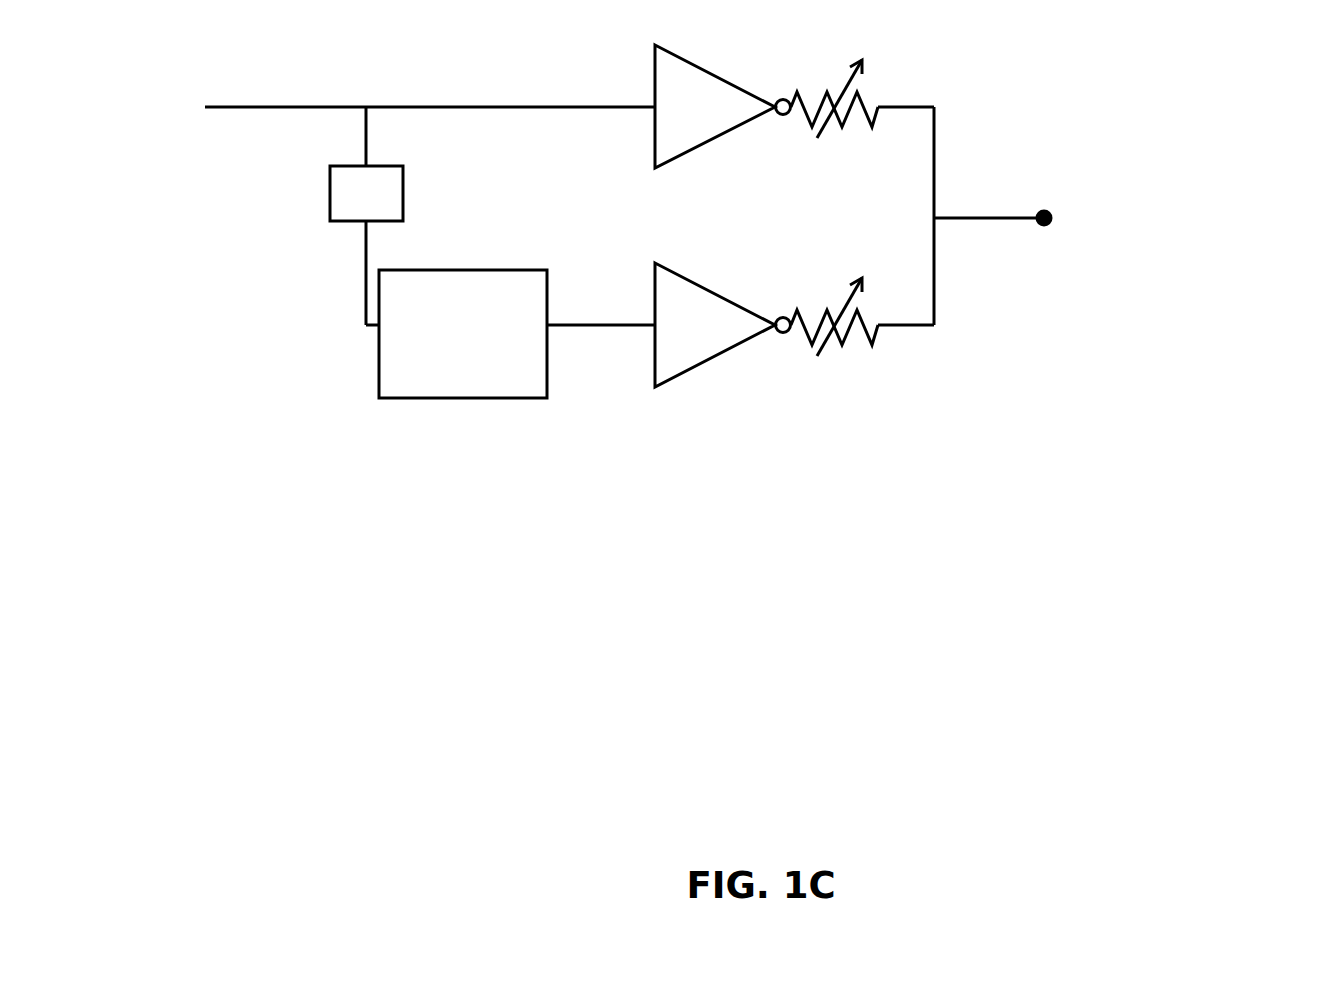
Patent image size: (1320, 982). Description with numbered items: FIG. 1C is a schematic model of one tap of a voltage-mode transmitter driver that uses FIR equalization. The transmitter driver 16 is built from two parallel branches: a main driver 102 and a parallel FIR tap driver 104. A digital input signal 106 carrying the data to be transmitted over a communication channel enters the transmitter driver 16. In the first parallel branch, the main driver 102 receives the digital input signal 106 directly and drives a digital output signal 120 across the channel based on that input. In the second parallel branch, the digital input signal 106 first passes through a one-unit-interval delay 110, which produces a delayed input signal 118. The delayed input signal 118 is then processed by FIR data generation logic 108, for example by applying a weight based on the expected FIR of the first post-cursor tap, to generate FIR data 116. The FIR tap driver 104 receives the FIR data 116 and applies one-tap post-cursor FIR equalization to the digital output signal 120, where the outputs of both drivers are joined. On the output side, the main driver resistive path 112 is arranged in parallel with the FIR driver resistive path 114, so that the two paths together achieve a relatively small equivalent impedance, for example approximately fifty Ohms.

The transmitter driver 16 is at (1086, 100).
The main driver 102 is at (723, 106).
The FIR tap driver 104 is at (723, 325).
The digital input signal 106 is at (406, 89).
The FIR data generation logic 108 is at (463, 334).
The one-unit-interval delay 110 is at (366, 164).
The main driver resistive path 112 is at (886, 78).
The FIR driver resistive path 114 is at (866, 362).
The FIR data 116 is at (610, 325).
The delayed input signal 118 is at (366, 283).
The digital output signal 120 is at (1082, 218).